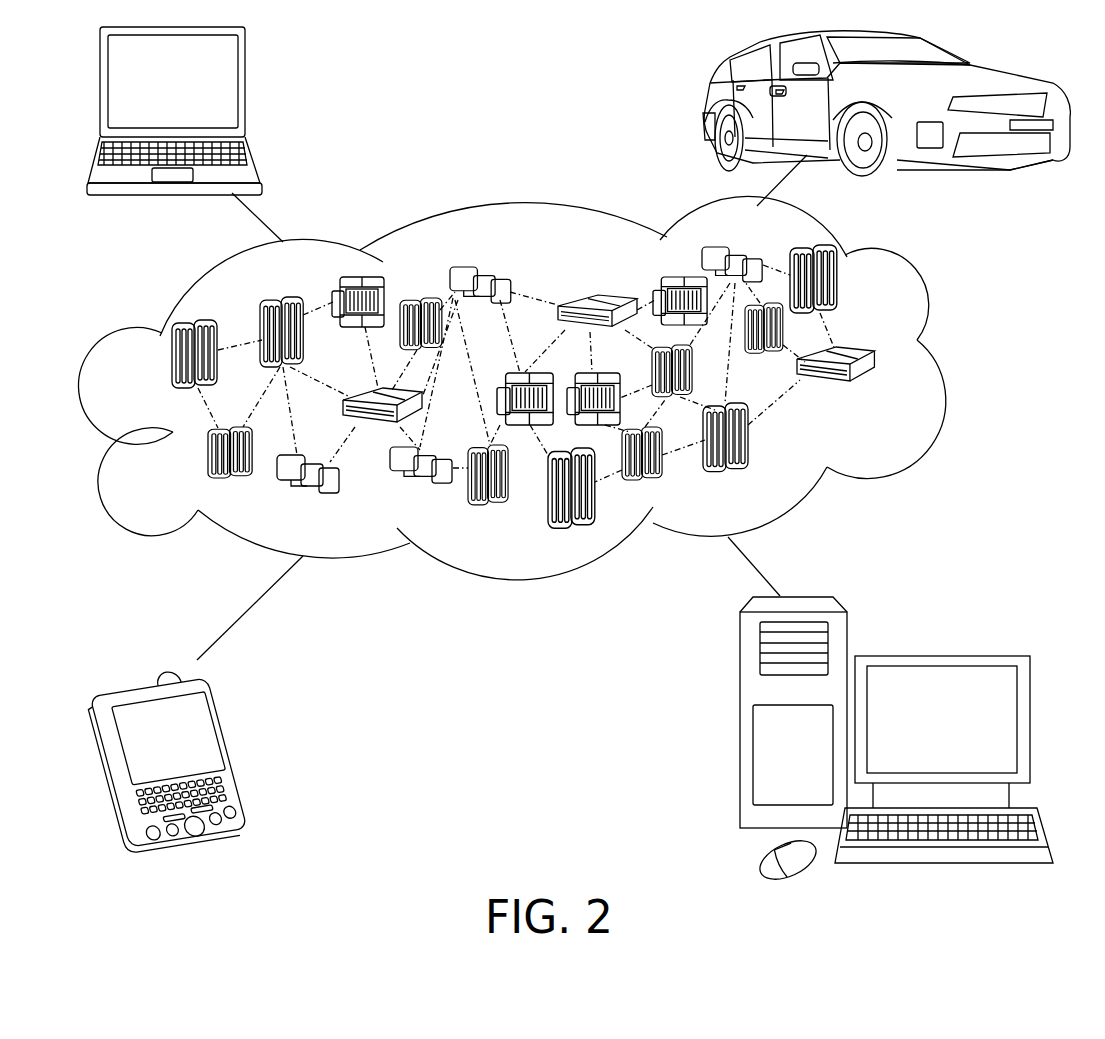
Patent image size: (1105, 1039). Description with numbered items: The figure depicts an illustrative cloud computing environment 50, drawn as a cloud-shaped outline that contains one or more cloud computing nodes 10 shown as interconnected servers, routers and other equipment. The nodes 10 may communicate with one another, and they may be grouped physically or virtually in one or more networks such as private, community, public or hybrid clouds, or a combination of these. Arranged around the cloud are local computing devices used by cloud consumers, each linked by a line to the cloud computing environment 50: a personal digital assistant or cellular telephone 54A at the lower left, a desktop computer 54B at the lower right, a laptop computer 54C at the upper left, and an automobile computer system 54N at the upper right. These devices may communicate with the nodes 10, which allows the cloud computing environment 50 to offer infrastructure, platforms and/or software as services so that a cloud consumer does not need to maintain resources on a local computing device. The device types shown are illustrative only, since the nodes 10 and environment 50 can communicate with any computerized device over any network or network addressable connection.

The cloud computing nodes 10 is at (878, 397).
The cloud computing environment 50 is at (940, 363).
The personal digital assistant or cellular telephone 54A is at (235, 750).
The desktop computer 54B is at (937, 655).
The laptop computer 54C is at (245, 92).
The automobile computer system 54N is at (708, 110).